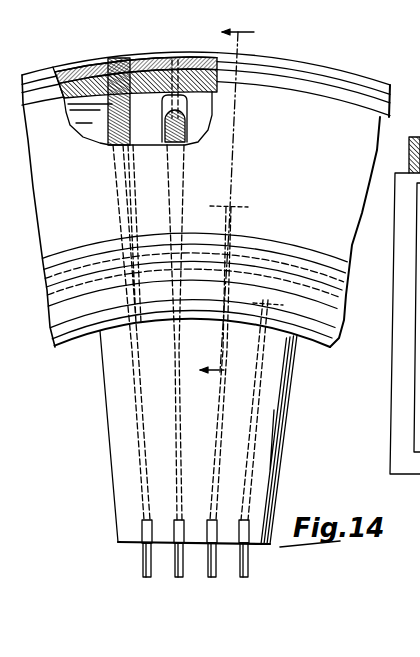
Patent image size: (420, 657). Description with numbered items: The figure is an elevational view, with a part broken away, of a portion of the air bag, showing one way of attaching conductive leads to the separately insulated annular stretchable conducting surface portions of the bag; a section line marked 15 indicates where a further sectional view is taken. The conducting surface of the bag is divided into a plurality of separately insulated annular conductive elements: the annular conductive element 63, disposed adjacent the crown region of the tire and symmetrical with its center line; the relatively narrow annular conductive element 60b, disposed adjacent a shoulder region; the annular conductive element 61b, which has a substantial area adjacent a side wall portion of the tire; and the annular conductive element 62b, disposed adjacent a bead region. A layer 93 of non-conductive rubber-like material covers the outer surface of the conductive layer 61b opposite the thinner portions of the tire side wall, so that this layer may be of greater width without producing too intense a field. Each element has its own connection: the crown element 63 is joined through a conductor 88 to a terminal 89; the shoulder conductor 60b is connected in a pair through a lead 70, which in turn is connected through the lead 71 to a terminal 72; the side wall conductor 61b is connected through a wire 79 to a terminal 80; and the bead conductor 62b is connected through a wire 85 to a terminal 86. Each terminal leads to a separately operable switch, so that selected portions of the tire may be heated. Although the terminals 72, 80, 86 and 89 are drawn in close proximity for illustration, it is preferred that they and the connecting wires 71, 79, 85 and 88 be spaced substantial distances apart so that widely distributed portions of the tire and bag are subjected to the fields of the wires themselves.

The section line for FIG. 15 is at (239, 207).
The annular conductive element 63 is at (302, 67).
The annular conductive element 60b is at (279, 80).
The annular conductive element 61b is at (276, 172).
The layer of non-conductive rubber-like material 93 is at (300, 181).
The annular conductive element 62b is at (314, 305).
The conductor 88 is at (129, 110).
The lead 70 is at (186, 101).
The lead 71 is at (178, 382).
The wire 79 is at (218, 453).
The wire 85 is at (263, 357).
The terminal 89 is at (140, 560).
The terminal 72 is at (177, 573).
The terminal 80 is at (208, 573).
The terminal 86 is at (248, 570).